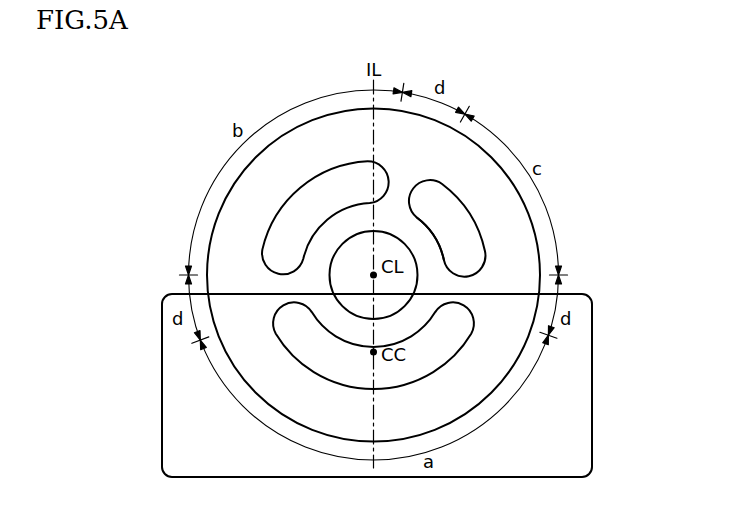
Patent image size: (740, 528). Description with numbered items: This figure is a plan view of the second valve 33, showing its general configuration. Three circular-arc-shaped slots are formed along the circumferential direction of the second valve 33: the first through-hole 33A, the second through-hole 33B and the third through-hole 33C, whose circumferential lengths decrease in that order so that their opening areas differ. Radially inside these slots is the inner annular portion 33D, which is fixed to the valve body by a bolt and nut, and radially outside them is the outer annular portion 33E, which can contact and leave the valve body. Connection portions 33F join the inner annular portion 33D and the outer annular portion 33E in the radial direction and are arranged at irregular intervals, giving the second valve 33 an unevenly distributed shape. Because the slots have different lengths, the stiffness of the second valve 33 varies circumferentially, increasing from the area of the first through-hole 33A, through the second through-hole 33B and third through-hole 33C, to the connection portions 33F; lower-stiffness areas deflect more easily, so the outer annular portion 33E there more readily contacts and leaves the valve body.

The second valve 33 is at (557, 96).
The first through-hole 33A is at (344, 360).
The second through-hole 33B is at (286, 227).
The third through-hole 33C is at (465, 240).
The inner annular portion 33D is at (417, 236).
The outer annular portion 33E is at (502, 212).
The connection portion 33F is at (403, 184).